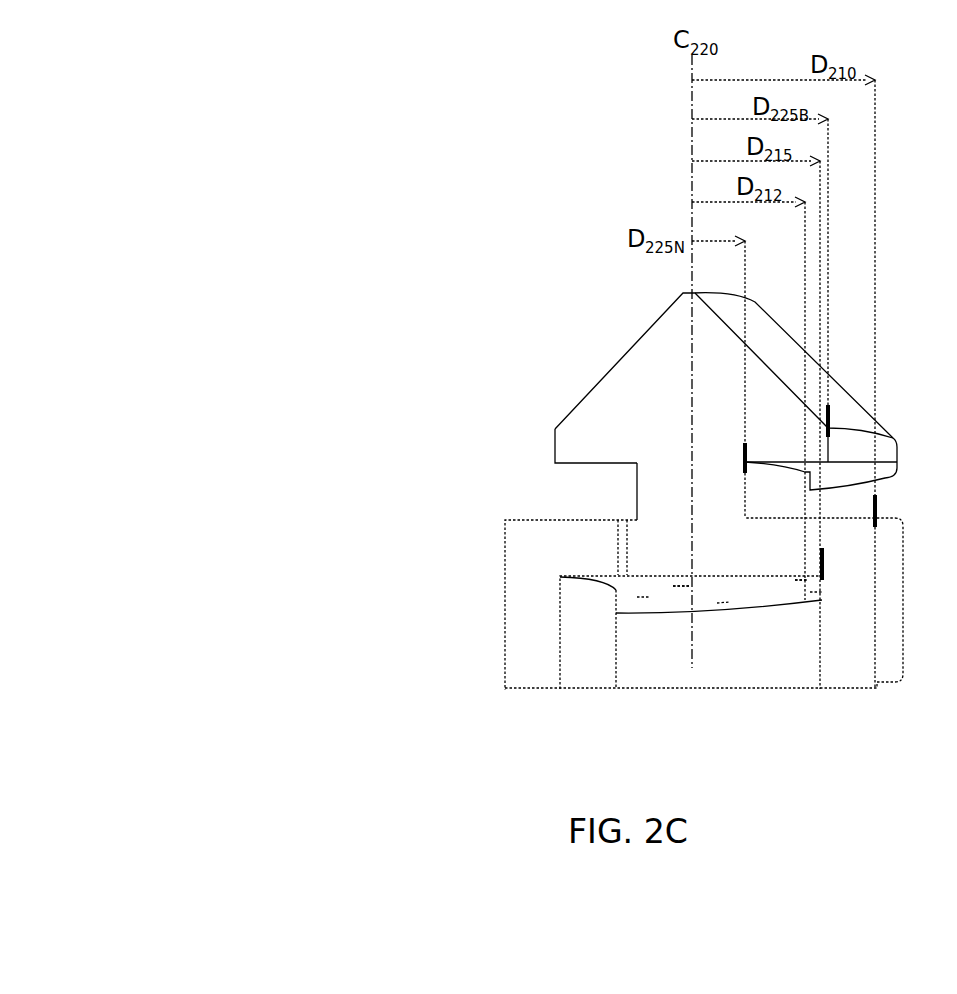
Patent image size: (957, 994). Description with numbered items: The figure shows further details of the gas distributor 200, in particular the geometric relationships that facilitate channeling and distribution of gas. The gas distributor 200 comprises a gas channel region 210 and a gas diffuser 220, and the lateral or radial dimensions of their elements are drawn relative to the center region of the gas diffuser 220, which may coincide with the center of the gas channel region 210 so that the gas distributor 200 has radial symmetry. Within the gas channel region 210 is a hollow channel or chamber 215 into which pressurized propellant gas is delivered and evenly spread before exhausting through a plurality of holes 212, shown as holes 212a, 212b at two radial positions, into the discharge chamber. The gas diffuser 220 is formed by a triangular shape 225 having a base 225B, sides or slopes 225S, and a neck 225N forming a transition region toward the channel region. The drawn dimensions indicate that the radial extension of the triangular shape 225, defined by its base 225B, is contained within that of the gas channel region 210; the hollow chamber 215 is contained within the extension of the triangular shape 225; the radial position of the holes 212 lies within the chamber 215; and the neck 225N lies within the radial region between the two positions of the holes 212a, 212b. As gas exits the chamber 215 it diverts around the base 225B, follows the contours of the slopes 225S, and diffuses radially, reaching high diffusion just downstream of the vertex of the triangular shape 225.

The gas distributor 200 is at (207, 387).
The gas diffuser 220 is at (277, 323).
The sides/slopes of the triangular shape 225S is at (613, 346).
The triangular shape 225 is at (618, 392).
The base of the triangular shape 225B is at (561, 444).
The neck 225N is at (653, 488).
The gas channel region 210 is at (530, 551).
The channel/chamber 215 is at (633, 640).
The plurality of holes 212 is at (747, 586).
The hole 212a is at (802, 594).
The hole 212b is at (679, 603).